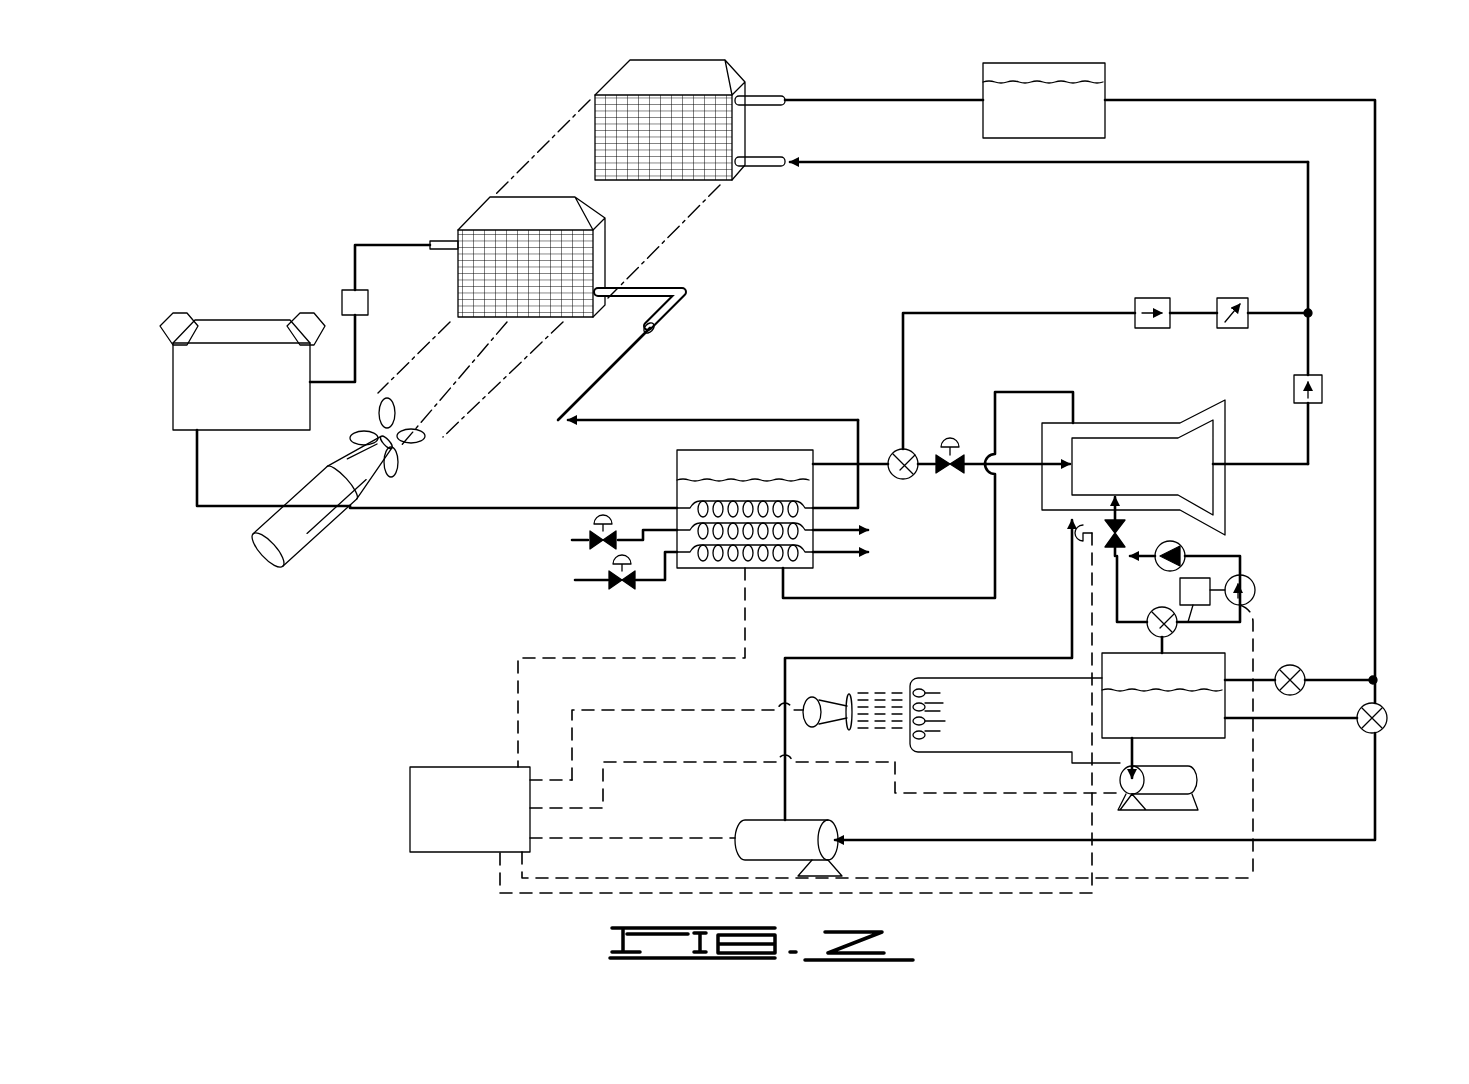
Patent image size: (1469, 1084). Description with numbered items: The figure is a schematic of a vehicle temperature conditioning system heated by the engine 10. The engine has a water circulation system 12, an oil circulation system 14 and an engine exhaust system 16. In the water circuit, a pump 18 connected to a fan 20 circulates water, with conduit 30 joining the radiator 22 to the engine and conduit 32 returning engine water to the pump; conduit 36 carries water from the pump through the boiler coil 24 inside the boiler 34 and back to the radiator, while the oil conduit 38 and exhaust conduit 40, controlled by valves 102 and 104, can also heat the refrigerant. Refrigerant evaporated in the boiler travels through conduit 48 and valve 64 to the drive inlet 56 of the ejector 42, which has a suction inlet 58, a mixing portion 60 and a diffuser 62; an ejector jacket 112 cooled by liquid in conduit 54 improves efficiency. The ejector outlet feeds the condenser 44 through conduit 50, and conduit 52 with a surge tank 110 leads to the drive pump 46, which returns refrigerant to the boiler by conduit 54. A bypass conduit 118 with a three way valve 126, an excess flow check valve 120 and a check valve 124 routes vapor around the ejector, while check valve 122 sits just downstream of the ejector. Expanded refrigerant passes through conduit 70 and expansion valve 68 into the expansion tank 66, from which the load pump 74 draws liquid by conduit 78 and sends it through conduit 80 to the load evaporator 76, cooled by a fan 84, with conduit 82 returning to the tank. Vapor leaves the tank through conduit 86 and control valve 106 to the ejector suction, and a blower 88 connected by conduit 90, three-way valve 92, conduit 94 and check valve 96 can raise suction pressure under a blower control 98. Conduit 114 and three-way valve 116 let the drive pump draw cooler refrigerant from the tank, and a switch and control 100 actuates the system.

The engine 10 is at (240, 322).
The water circulation system 12 is at (242, 567).
The oil circulation system 14 is at (570, 524).
The engine exhaust system 16 is at (590, 588).
The pump 18 is at (315, 545).
The fan 20 is at (396, 470).
The radiator 22 is at (472, 222).
The boiler coil 24 is at (800, 500).
The conduit 30 is at (355, 262).
The conduit 32 is at (197, 468).
The boiler 34 is at (670, 455).
The conduit 36 is at (690, 422).
The oil circulation system conduit 38 is at (838, 527).
The engine exhaust system conduit 40 is at (836, 553).
The ejector 42 is at (1140, 425).
The condenser 44 is at (760, 80).
The drive pump 46 is at (830, 875).
The conduit 48 is at (874, 446).
The conduit 50 is at (950, 162).
The conduit 52 is at (1395, 403).
The conduit 54 is at (903, 598).
The drive inlet portion 56 is at (1068, 472).
The suction inlet portion 58 is at (1130, 497).
The mixing portion 60 is at (1150, 485).
The diffuser or outlet portion 62 is at (1220, 455).
The valve 64 is at (958, 440).
The expansion tank 66 is at (1218, 728).
The expansion valve 68 is at (1295, 662).
The conduit 70 is at (1340, 670).
The load pump 74 is at (1160, 812).
The load evaporator 76 is at (915, 752).
The conduit 78 is at (1140, 750).
The conduit 80 is at (1005, 752).
The conduit 82 is at (1003, 680).
The fan 84 is at (825, 700).
The conduit 86 is at (1120, 578).
The blower 88 is at (1255, 596).
The conduit 90 is at (1258, 622).
The three-way valve 92 is at (1150, 630).
The conduit 94 is at (1240, 556).
The check valve 96 is at (1183, 548).
The blower control 98 is at (1198, 620).
The switch and control 100 is at (410, 828).
The valve 102 is at (612, 520).
The valve 104 is at (628, 592).
The control valve 106 is at (1080, 538).
The surge tank 110 is at (1108, 88).
The ejector jacket 112 is at (1195, 408).
The conduit 114 is at (1325, 720).
The three-way valve 116 is at (1385, 705).
The bypass conduit 118 is at (1043, 318).
The excess flow check valve 120 is at (1150, 298).
The check valve 122 is at (1322, 380).
The check valve 124 is at (1232, 298).
The three way valve 126 is at (913, 476).